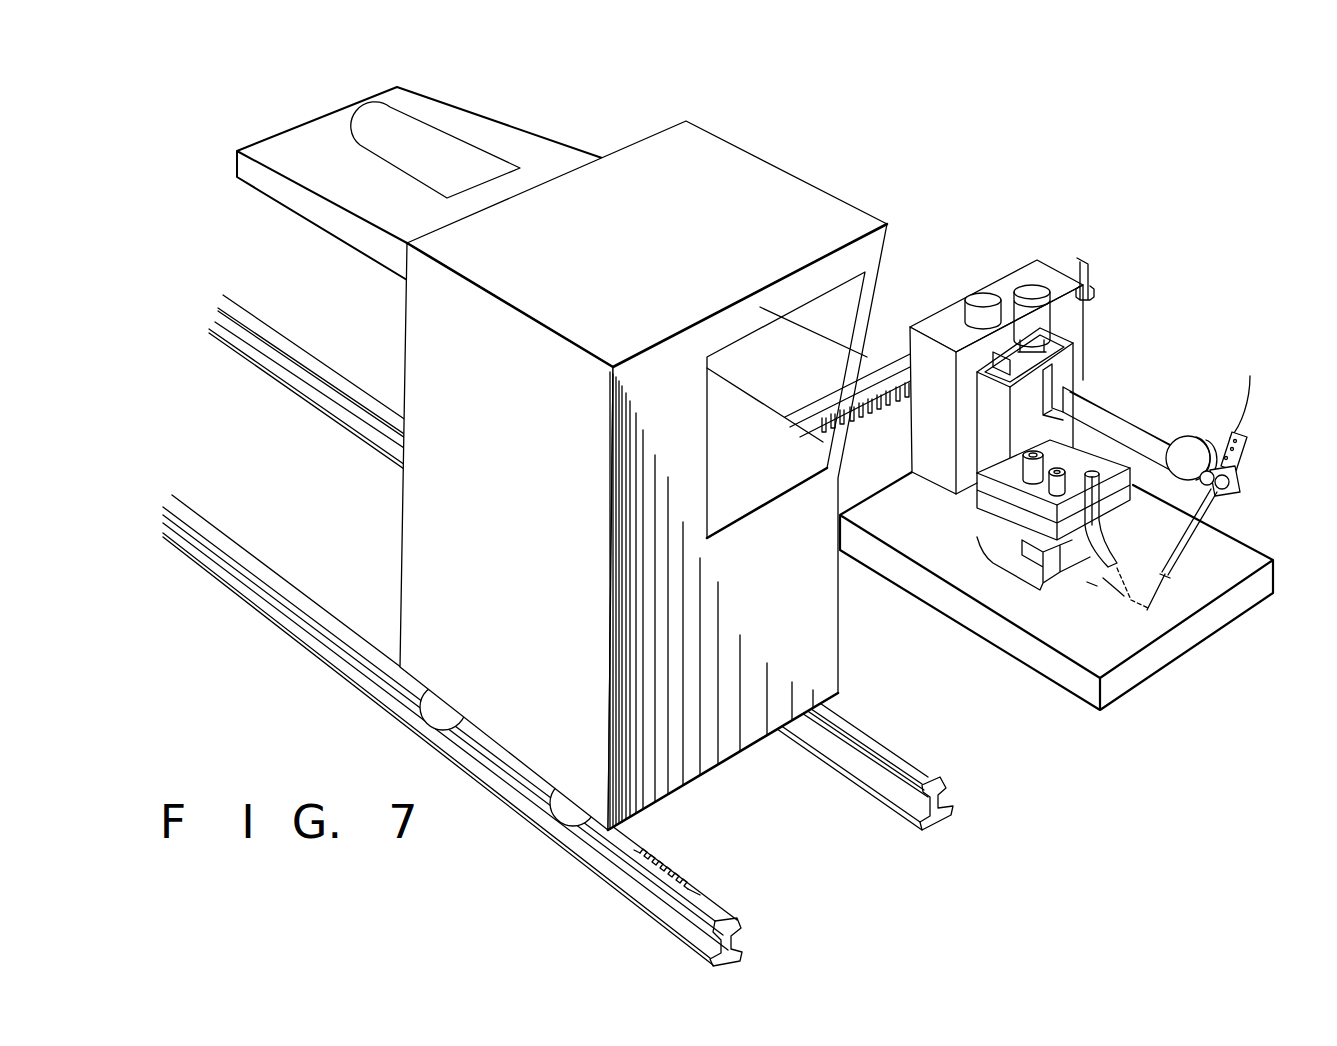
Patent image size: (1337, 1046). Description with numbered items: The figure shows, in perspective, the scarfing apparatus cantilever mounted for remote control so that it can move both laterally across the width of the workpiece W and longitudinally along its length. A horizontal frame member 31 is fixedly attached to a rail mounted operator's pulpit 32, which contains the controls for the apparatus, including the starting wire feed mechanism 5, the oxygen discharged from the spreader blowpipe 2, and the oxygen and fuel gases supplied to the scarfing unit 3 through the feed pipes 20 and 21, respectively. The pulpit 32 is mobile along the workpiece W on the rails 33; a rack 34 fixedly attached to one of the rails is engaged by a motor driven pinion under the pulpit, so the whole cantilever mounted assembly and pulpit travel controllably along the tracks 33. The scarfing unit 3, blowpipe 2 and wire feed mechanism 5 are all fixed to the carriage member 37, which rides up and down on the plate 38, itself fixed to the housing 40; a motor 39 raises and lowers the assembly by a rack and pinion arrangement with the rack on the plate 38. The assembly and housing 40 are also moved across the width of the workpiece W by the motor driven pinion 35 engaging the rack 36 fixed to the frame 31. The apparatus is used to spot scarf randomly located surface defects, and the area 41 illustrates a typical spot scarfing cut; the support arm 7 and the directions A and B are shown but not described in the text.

The spreader blowpipe 2 is at (1112, 553).
The scarfing unit 3 is at (973, 528).
The starting wire feed mechanism 5 is at (1240, 477).
The torch support arm 7 is at (1113, 413).
The feed pipe 20 is at (1055, 468).
The feed pipe 21 is at (1022, 490).
The horizontal frame member 31 is at (1080, 262).
The operator's pulpit 32 is at (843, 208).
The rails 33 is at (878, 735).
The rack 34 is at (672, 866).
The motor driven pinion 35 is at (978, 300).
The rack 36 is at (868, 417).
The carriage member 37 is at (993, 453).
The plate 38 is at (1013, 363).
The motor 39 is at (1045, 313).
The housing 40 is at (1042, 270).
The area of spot scarfing cut 41 is at (452, 150).
The workpiece W is at (1240, 562).
The direction A is at (1140, 611).
The direction B is at (1125, 600).